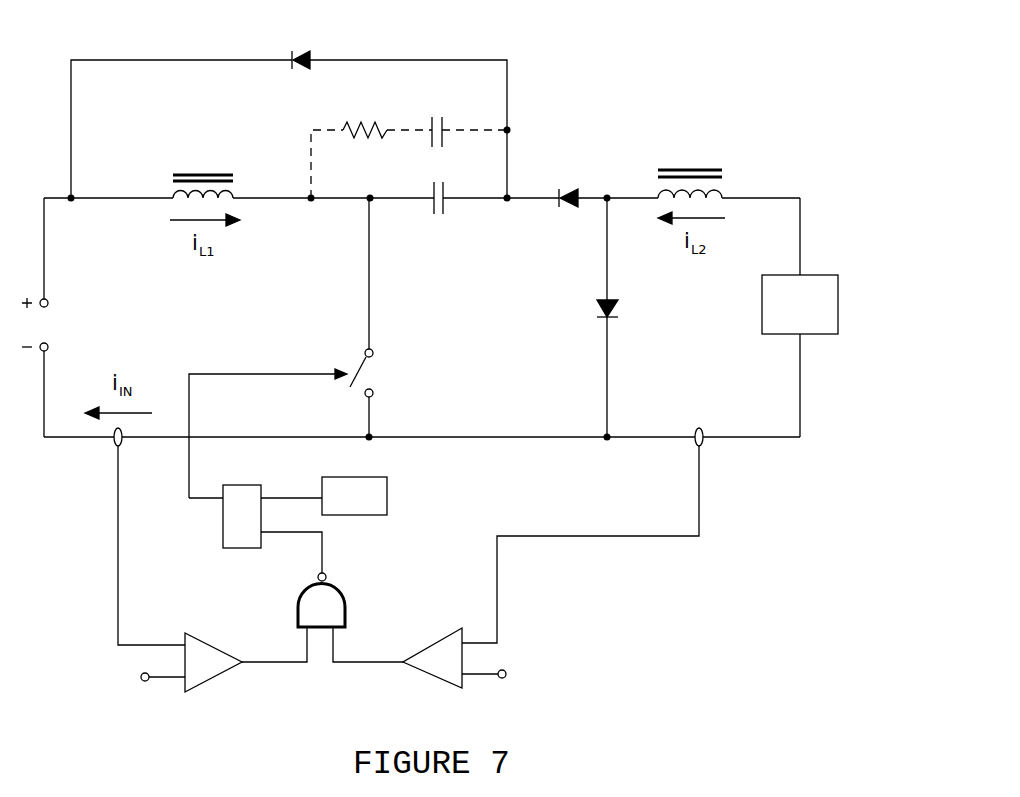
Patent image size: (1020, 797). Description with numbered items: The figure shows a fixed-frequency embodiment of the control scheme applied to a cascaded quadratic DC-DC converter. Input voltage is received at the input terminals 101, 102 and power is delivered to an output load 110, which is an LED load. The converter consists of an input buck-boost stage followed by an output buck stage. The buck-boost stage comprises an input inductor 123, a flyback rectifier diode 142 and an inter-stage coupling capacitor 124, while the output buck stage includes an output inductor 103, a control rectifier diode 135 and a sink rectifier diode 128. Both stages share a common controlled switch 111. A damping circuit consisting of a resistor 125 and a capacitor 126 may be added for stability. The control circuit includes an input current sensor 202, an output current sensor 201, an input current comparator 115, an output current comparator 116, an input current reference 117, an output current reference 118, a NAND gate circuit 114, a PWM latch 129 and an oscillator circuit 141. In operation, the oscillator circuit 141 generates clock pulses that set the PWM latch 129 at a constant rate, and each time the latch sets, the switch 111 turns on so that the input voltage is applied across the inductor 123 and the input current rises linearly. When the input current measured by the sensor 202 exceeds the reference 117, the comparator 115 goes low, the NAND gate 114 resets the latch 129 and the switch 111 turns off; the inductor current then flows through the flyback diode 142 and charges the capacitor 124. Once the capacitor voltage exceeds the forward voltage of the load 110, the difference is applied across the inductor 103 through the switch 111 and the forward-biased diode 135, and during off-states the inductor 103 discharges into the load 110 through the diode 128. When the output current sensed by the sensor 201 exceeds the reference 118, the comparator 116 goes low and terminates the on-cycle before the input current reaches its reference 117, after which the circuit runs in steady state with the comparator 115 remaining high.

The input terminal 101 is at (50, 302).
The input terminal 102 is at (50, 347).
The output inductor 103 is at (728, 172).
The output load 110 is at (840, 292).
The controlled switch 111 is at (357, 352).
The 'NAND' gate circuit 114 is at (289, 596).
The input current comparator 115 is at (218, 685).
The output current comparator 116 is at (420, 675).
The input current reference 117 is at (150, 688).
The output current reference 118 is at (490, 683).
The input inductor 123 is at (160, 183).
The inter-stage coupling capacitor 124 is at (432, 193).
The resistor 125 is at (342, 127).
The capacitor 126 is at (428, 120).
The sink rectifier diode 128 is at (624, 313).
The PWM latch 129 is at (213, 524).
The control rectifier diode 135 is at (558, 166).
The oscillator circuit 141 is at (392, 489).
The flyback rectifier diode 142 is at (283, 50).
The output current sensor 201 is at (705, 455).
The input current sensor 202 is at (110, 456).